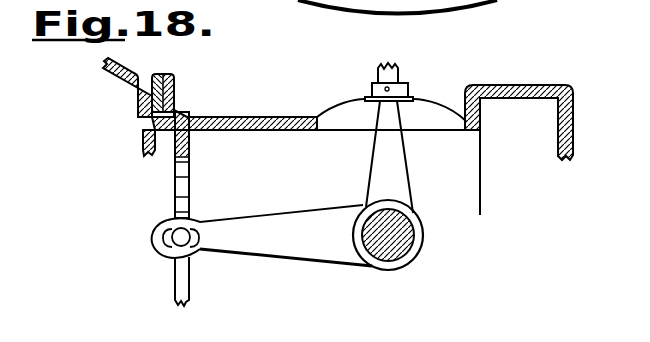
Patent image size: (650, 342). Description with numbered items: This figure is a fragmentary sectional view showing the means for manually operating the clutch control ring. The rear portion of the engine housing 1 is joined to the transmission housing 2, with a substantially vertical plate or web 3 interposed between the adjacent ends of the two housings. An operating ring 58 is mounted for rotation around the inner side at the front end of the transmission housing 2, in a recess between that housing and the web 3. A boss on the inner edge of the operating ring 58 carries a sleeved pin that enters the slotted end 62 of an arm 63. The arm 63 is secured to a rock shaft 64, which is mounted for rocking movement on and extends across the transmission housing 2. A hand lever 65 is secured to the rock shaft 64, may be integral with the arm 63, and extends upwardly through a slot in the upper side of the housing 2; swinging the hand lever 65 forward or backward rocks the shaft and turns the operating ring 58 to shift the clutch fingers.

The engine housing 1 is at (112, 80).
The transmission housing 2 is at (232, 117).
The vertical plate or web 3 is at (147, 131).
The operating ring 58 is at (190, 172).
The slotted end 62 is at (158, 253).
The arm 63 is at (262, 228).
The rock shaft 64 is at (383, 253).
The hand lever 65 is at (393, 147).